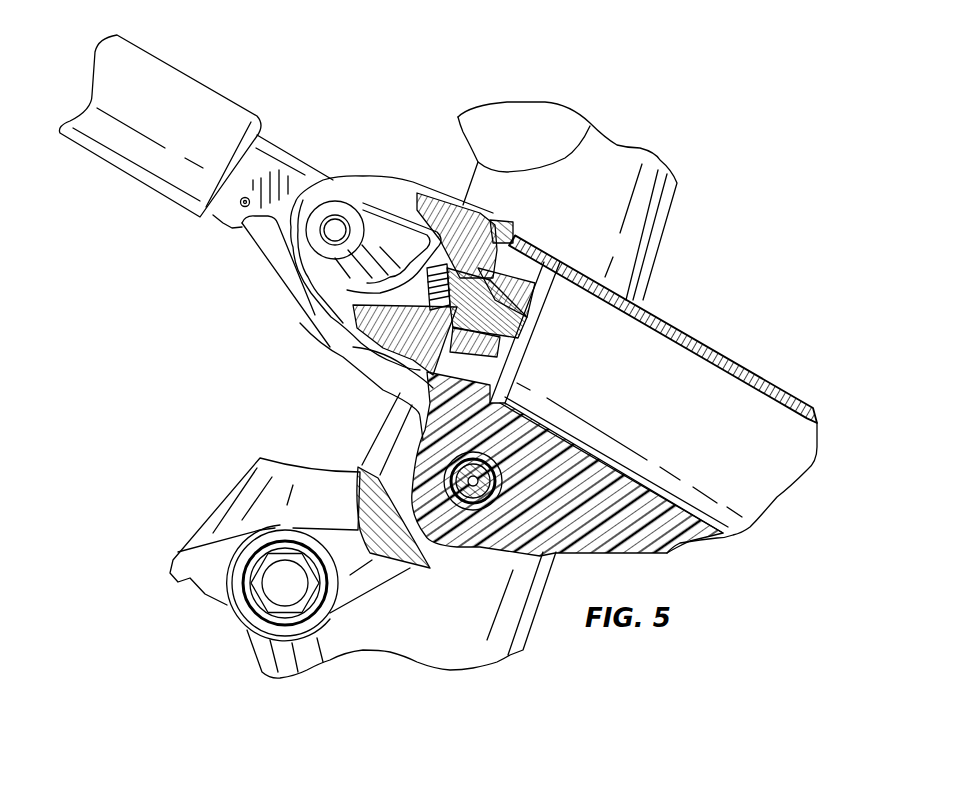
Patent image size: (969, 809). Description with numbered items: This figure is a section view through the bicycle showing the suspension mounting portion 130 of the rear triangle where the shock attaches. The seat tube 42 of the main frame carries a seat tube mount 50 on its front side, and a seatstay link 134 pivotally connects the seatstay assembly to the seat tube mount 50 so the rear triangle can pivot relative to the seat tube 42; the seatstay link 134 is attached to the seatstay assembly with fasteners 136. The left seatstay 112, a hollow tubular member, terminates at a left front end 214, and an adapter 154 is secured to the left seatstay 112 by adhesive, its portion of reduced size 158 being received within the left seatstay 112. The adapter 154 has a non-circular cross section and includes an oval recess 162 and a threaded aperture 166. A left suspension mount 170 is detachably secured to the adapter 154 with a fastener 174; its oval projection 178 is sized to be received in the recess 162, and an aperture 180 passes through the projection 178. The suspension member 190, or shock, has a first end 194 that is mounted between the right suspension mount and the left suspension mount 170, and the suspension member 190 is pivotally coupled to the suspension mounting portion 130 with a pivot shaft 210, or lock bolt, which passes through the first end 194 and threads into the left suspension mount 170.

The seat tube 42 is at (663, 197).
The seat tube mount 50 is at (263, 650).
The left seatstay 112 is at (713, 350).
The suspension mounting portion 130 is at (731, 286).
The seatstay link 134 is at (215, 507).
The fasteners 136 is at (277, 583).
The adapter 154 is at (558, 324).
The portion of reduced size 158 is at (560, 285).
The recess 162 is at (487, 227).
The threaded aperture 166 is at (527, 373).
The left suspension mount 170 is at (323, 273).
The fastener 174 is at (417, 290).
The projection 178 is at (510, 237).
The aperture 180 is at (423, 320).
The suspension member 190 is at (212, 72).
The first end 194 is at (293, 183).
The pivot shaft 210 is at (330, 230).
The left front end 214 is at (420, 380).